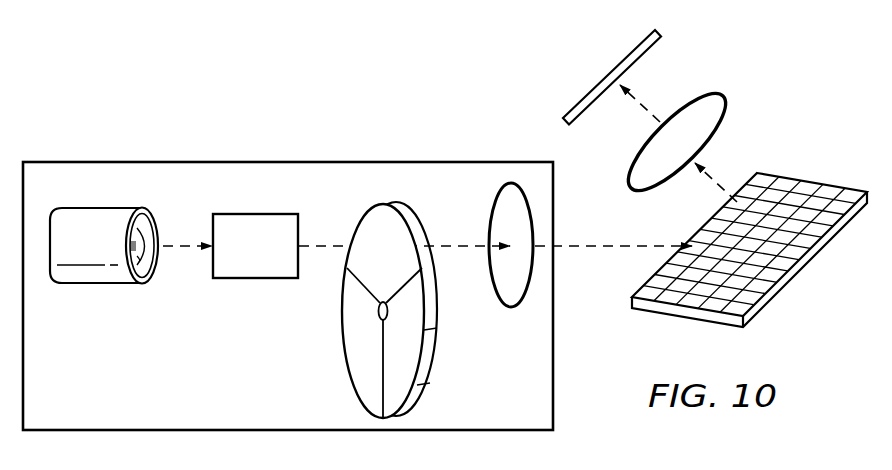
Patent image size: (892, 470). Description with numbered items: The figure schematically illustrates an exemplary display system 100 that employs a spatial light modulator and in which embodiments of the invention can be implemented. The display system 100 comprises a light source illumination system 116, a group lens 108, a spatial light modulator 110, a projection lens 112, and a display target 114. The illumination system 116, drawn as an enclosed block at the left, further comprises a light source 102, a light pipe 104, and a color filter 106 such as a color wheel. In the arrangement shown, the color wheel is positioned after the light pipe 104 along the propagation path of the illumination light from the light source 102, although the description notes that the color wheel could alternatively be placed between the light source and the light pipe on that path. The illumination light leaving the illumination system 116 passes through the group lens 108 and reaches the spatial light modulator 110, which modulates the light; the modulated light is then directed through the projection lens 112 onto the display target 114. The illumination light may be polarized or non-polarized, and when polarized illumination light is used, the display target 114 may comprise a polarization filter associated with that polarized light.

The display system 100 is at (244, 91).
The light source 102 is at (100, 285).
The light pipe 104 is at (256, 280).
The color filter 106 is at (343, 352).
The group lens 108 is at (507, 310).
The spatial light modulator 110 is at (816, 183).
The projection lens 112 is at (720, 96).
The display target 114 is at (625, 55).
The light source illumination system 116 is at (170, 397).